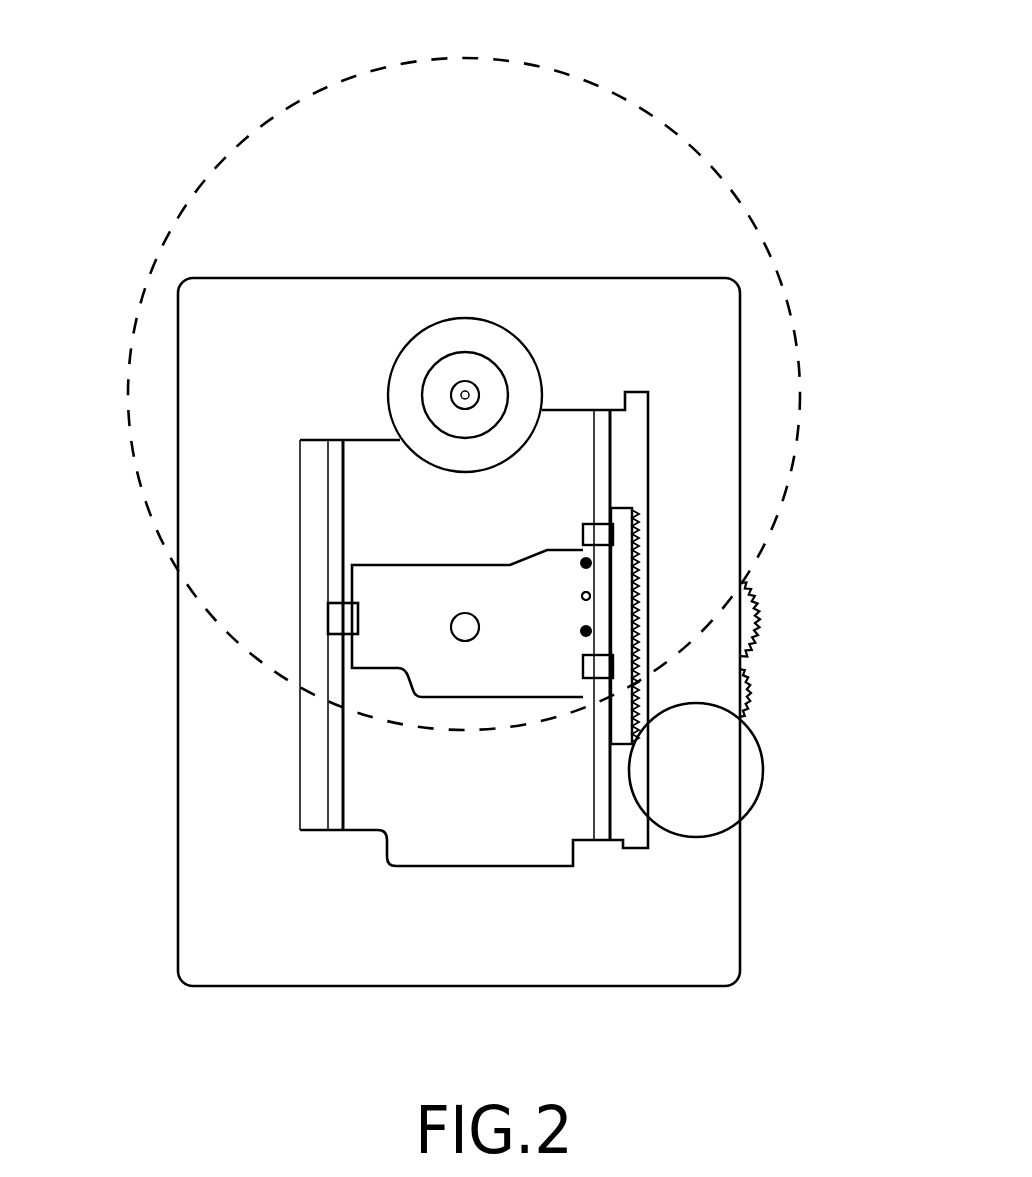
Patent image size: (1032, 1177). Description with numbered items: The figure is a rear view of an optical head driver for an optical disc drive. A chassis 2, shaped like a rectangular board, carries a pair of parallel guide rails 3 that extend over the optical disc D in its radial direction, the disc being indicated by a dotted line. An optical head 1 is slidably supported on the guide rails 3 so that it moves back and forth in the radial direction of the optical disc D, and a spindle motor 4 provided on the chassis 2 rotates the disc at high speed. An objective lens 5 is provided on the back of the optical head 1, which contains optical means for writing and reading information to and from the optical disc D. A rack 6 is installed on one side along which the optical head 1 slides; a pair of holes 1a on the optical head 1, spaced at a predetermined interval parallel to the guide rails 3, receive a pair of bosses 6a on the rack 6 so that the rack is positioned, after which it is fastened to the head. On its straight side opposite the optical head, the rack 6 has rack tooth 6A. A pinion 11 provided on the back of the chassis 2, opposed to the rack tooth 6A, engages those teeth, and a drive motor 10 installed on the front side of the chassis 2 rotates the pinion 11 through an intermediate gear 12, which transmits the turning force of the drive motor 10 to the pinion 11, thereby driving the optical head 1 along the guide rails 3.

The optical disc D is at (598, 70).
The optical head 1 is at (397, 593).
The holes 1a is at (585, 563).
The chassis 2 is at (628, 308).
The guide rails 3 is at (345, 473).
The spindle motor 4 is at (465, 393).
The objective lens 5 is at (450, 627).
The rack 6 is at (613, 740).
The bosses 6a is at (588, 632).
The rack tooth 6A is at (635, 557).
The drive motor 10 is at (735, 792).
The pinion 11 is at (757, 625).
The intermediate gear 12 is at (750, 700).